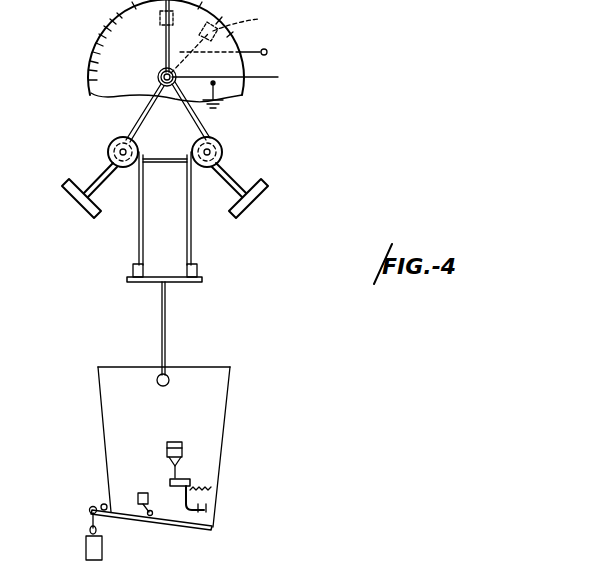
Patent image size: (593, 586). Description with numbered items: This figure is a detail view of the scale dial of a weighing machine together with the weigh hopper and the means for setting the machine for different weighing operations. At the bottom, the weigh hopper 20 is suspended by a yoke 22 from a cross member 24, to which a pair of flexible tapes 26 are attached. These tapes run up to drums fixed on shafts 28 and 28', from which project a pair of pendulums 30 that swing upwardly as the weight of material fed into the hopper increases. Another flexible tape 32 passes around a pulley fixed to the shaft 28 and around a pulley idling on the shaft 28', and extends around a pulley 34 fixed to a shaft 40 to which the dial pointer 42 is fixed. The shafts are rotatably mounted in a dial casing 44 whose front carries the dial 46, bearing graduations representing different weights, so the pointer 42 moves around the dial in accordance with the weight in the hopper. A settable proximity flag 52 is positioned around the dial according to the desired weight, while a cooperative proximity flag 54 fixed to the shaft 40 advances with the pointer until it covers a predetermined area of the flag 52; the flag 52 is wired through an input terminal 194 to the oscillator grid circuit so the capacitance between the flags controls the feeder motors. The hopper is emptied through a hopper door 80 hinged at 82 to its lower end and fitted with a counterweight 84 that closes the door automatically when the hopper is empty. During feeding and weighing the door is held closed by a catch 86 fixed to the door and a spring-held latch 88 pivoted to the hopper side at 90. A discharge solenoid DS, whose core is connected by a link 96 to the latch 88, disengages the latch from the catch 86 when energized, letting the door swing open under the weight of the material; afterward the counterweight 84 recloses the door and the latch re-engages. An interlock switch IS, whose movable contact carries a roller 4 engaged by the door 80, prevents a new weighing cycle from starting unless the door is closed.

The dial 46 is at (90, 46).
The dial pointer 42 is at (163, 54).
The cooperative proximity flag 54 is at (206, 12).
The proximity flag 52 is at (229, 38).
The dial casing 44 is at (238, 40).
The input terminal 194 is at (278, 77).
The pulley 34 is at (158, 78).
The shaft 40 is at (157, 95).
The flexible tape 32 is at (201, 124).
The shaft 28 is at (100, 152).
The shaft 28' is at (237, 152).
The pendulums 30 is at (73, 213).
The flexible tapes 26 is at (190, 229).
The cross member 24 is at (180, 283).
The yoke 22 is at (166, 330).
The weigh hopper 20 is at (98, 380).
The hopper door discharge solenoid DS is at (177, 447).
The link 96 is at (178, 470).
The pivot 90 is at (190, 482).
The catch 86 is at (205, 508).
The interlock switch IS is at (134, 479).
The roller 4 is at (150, 507).
The hinge 82 is at (104, 504).
The counterweight 84 is at (86, 545).
The hopper door 80 is at (133, 522).
The latch 88 is at (180, 498).